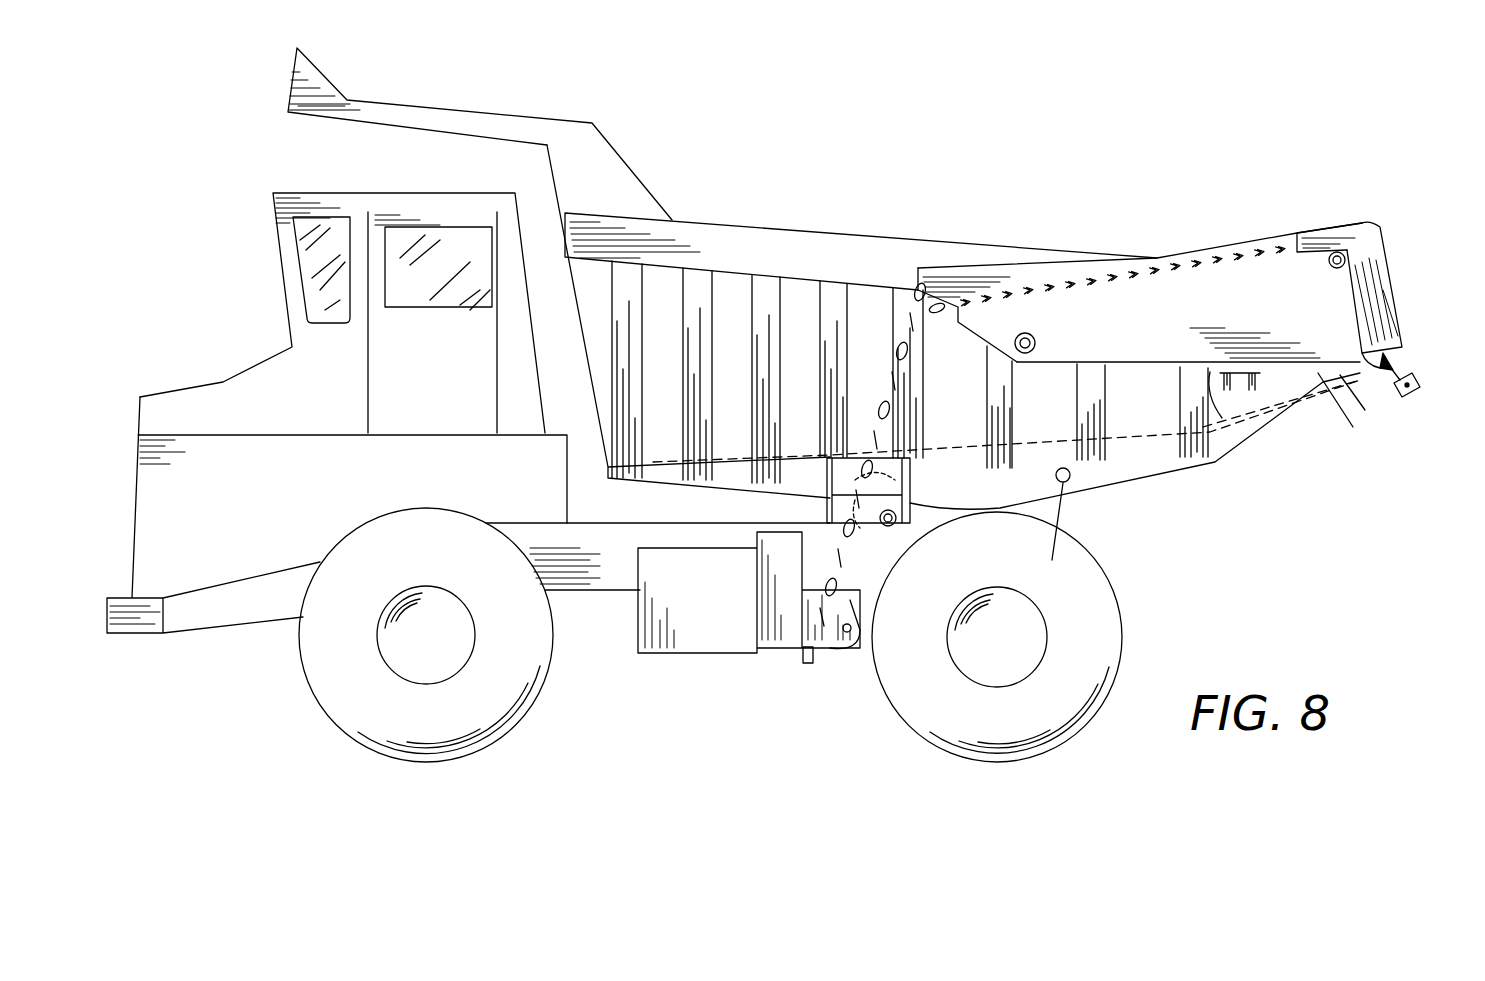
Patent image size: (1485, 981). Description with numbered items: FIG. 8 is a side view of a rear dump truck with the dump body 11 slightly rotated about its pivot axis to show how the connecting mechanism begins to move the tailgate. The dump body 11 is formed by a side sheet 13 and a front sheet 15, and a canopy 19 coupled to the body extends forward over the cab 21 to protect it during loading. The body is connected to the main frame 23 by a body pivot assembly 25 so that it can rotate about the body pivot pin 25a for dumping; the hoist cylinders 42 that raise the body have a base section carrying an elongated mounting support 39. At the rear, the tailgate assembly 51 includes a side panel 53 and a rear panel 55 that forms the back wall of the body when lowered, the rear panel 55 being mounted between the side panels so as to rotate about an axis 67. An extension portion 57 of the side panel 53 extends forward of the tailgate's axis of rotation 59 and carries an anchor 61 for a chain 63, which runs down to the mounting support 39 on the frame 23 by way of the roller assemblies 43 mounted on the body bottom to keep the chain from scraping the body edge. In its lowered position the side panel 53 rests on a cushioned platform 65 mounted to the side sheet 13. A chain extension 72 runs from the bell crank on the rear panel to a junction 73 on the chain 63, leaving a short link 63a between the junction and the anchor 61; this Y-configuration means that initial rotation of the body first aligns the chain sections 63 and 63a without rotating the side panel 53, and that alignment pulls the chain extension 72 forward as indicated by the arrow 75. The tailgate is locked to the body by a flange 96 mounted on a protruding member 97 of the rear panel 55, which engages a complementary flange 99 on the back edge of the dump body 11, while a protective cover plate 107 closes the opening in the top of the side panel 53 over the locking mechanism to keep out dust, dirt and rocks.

The dump body 11 is at (614, 136).
The side sheet 13 is at (777, 247).
The front sheet 15 is at (588, 358).
The canopy 19 is at (472, 118).
The cab 21 is at (252, 387).
The main frame 23 is at (595, 590).
The body pivot assembly 25 is at (1077, 478).
The body pivot pin 25a is at (1057, 483).
The mounting support 39 is at (803, 653).
The hoist cylinders 42 is at (865, 610).
The roller assemblies 43 is at (913, 497).
The tailgate assembly 51 is at (1165, 250).
The side panel 53 is at (1317, 360).
The rear panel 55 is at (1378, 275).
The extension portion 57 is at (960, 280).
The axis of rotation 59 is at (1037, 337).
The anchor 61 is at (923, 280).
The chain 63 is at (885, 398).
The short link 63a is at (917, 290).
The platform 65 is at (1210, 380).
The axis 67 is at (1340, 270).
The chain extension 72 is at (1220, 280).
The junction 73 is at (927, 320).
The arrow 75 is at (1090, 293).
The flange 96 is at (1415, 387).
The protruding member 97 is at (1458, 327).
The complementary flange 99 is at (1360, 370).
The protective cover plate 107 is at (1320, 227).